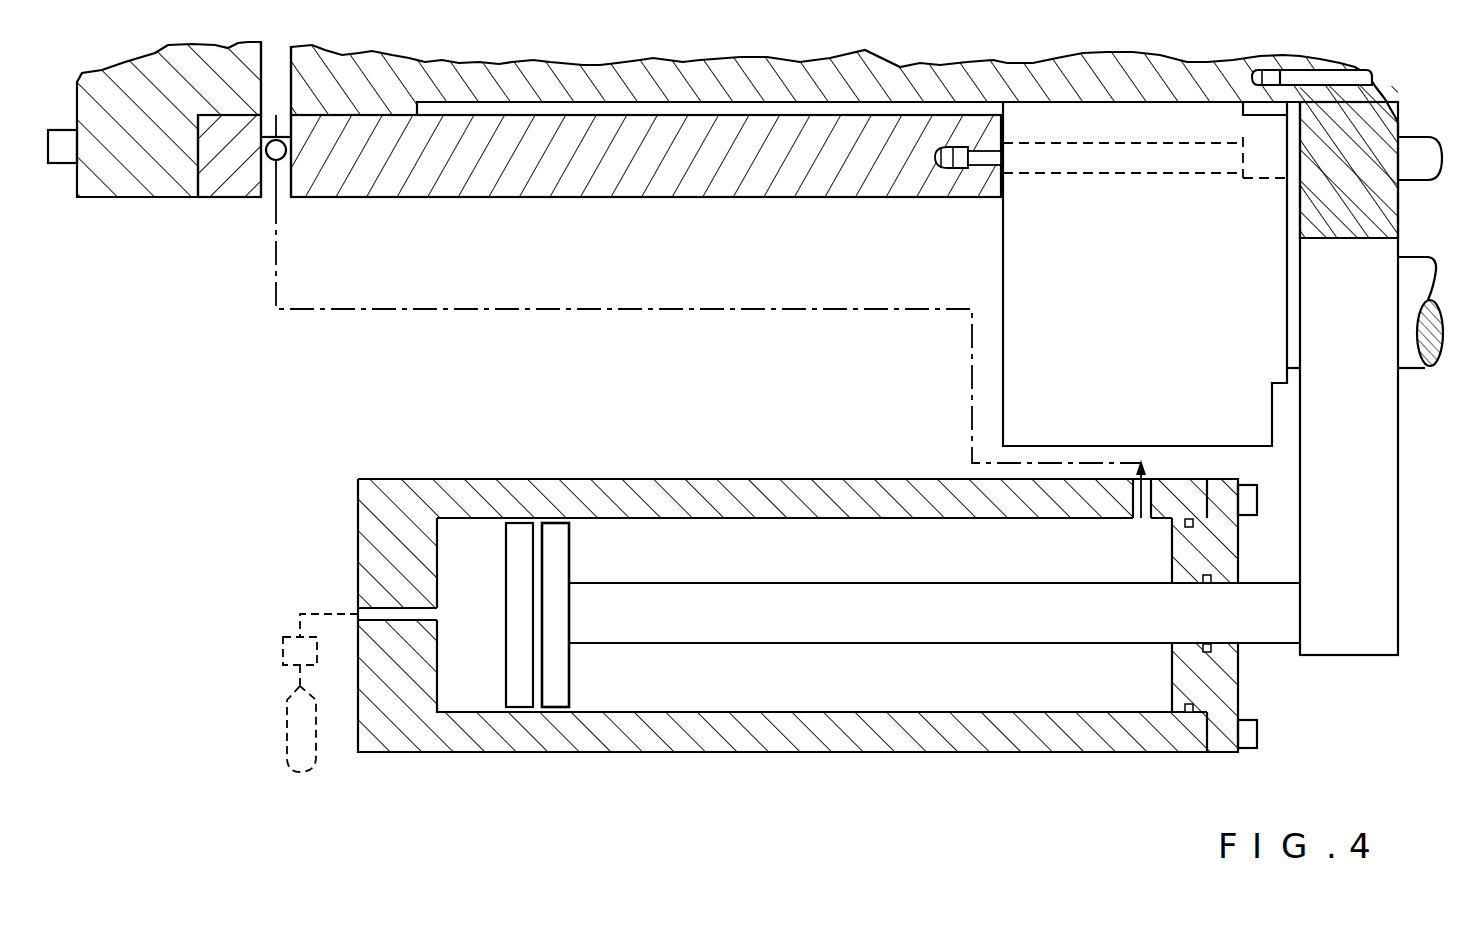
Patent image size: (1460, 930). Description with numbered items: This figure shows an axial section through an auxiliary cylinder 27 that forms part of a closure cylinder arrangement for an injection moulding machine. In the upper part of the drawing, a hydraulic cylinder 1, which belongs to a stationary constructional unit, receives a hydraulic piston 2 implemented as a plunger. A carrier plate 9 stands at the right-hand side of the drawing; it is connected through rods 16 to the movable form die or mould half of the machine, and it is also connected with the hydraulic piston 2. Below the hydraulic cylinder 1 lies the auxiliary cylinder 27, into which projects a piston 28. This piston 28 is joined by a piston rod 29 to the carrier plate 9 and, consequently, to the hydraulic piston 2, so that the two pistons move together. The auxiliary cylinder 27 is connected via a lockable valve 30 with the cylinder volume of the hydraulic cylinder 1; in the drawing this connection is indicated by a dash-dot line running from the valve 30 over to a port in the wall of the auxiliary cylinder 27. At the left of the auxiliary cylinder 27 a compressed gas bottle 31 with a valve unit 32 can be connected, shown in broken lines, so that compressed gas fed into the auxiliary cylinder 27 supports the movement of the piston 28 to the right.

The hydraulic cylinder 1 is at (545, 165).
The hydraulic piston 2 is at (333, 103).
The carrier plate 9 is at (1383, 582).
The rods 16 is at (1425, 157).
The auxiliary cylinder 27 is at (600, 476).
The piston 28 is at (516, 530).
The piston rod 29 is at (735, 612).
The lockable valve 30 is at (272, 160).
The compressed gas bottle 31 is at (305, 745).
The valve unit 32 is at (287, 651).